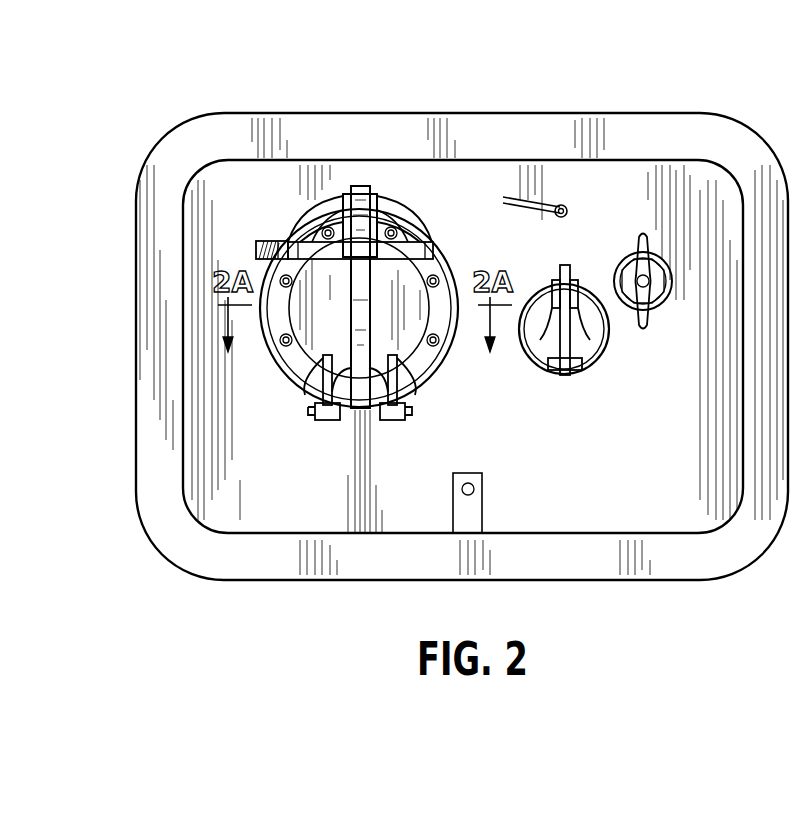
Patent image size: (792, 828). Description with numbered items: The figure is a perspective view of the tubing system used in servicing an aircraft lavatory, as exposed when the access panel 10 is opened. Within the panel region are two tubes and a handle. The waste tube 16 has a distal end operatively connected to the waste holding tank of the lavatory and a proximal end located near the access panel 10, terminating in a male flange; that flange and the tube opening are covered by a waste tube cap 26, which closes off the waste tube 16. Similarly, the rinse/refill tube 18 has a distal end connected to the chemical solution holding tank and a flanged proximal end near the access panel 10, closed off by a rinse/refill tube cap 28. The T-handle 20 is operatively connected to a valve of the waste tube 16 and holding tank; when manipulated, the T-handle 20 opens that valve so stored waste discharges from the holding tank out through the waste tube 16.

The access panel 10 is at (150, 106).
The waste tube 16 is at (270, 371).
The rinse/refill tube 18 is at (612, 355).
The T-handle 20 is at (642, 236).
The waste tube cap 26 is at (432, 372).
The rinse/refill tube cap 28 is at (531, 356).